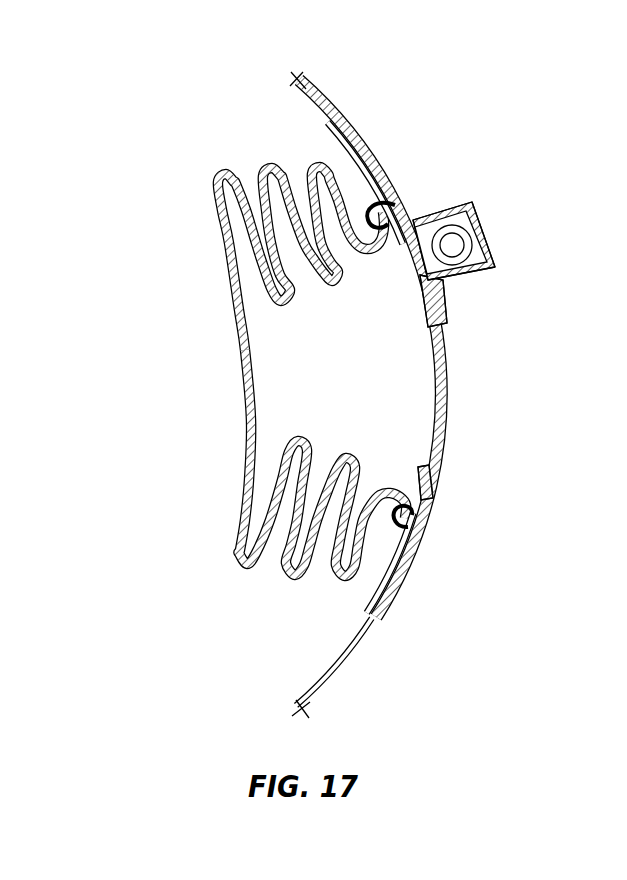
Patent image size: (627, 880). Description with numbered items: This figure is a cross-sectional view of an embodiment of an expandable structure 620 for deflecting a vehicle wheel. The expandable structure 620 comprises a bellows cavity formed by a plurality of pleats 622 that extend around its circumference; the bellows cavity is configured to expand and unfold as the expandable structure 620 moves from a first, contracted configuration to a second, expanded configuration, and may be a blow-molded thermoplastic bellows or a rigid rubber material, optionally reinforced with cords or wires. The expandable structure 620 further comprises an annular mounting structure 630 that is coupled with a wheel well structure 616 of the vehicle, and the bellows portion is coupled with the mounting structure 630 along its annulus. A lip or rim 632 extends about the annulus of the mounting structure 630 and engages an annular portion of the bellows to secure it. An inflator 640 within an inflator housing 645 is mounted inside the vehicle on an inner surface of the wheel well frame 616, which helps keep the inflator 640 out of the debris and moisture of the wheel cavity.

The wheel well structure 616 is at (447, 414).
The expandable structure 620 is at (208, 502).
The pleats 622 is at (250, 150).
The mounting structure 630 is at (372, 598).
The lip or rim 632 is at (366, 205).
The inflator 640 is at (454, 245).
The inflator housing 645 is at (496, 264).